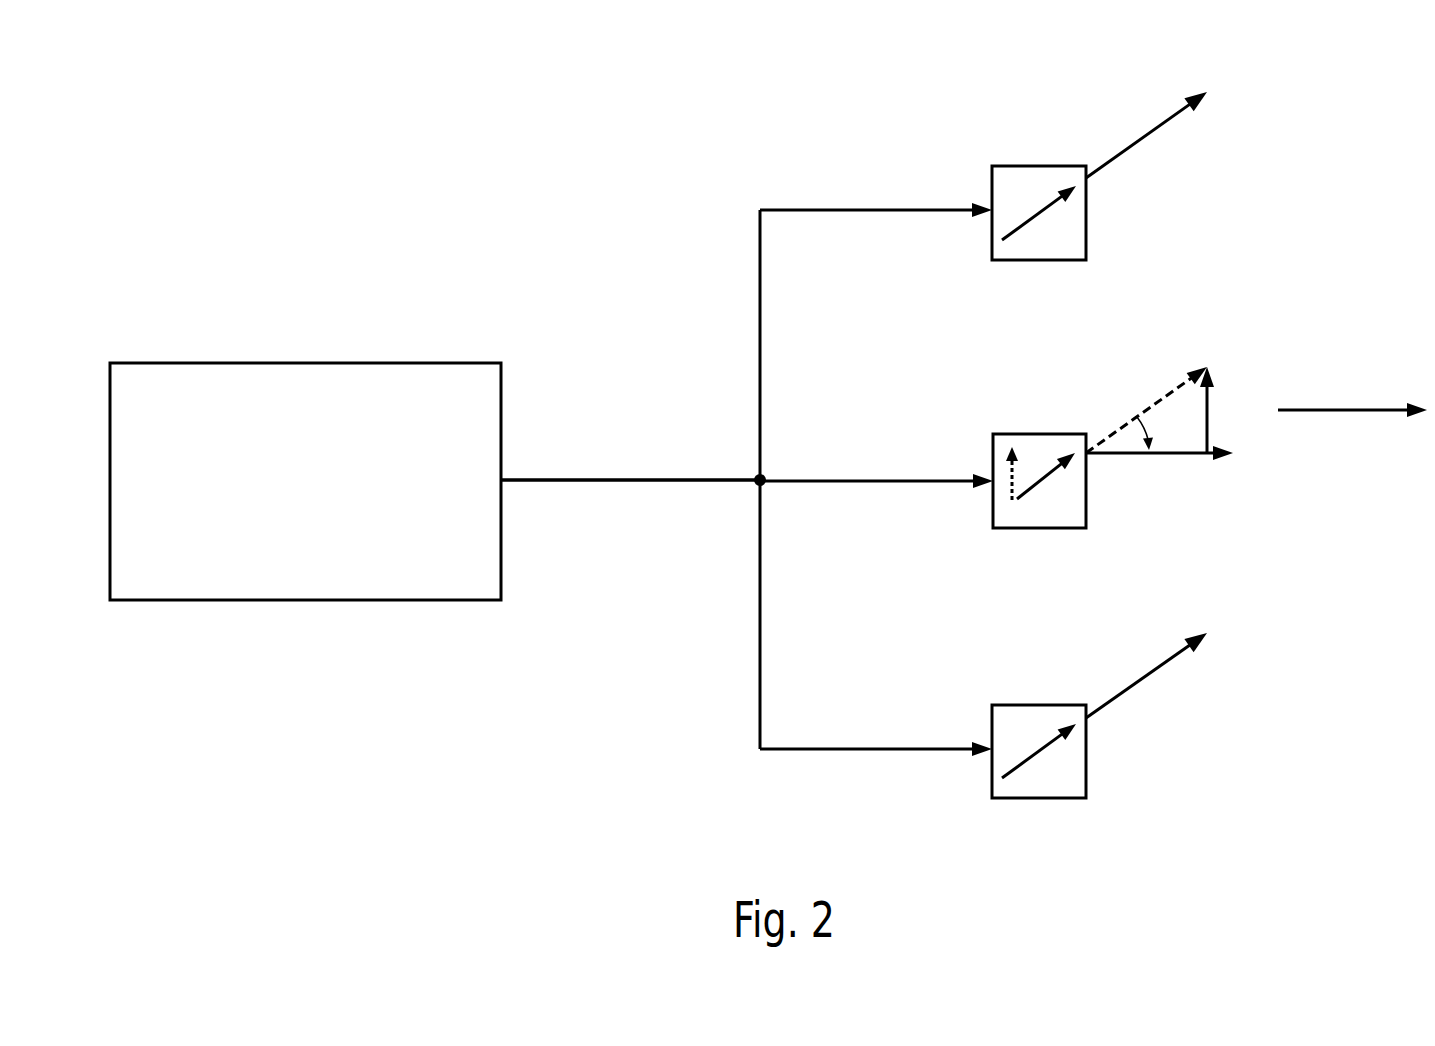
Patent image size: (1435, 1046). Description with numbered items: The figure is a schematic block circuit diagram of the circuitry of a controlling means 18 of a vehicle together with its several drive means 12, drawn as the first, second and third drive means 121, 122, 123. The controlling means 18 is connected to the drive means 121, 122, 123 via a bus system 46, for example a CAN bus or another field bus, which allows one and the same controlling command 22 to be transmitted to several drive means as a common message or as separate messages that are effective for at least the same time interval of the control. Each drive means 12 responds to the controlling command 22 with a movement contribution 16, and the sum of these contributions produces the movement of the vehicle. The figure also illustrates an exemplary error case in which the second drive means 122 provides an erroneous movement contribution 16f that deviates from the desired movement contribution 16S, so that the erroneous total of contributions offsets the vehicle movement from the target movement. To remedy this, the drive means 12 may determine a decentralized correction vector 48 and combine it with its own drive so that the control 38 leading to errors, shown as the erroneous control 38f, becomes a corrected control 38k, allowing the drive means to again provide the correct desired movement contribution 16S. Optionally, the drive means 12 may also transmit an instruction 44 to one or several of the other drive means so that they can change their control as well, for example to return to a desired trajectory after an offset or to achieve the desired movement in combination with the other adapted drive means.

The controlling means 18 is at (301, 363).
The controlling command 22 is at (630, 480).
The bus system 46 is at (570, 395).
The drive means 12 is at (1039, 437).
The first drive means 121 is at (1038, 166).
The second drive means 122 is at (1036, 434).
The third drive means 123 is at (1038, 705).
The control 38 is at (1002, 505).
The corrected control 38k is at (1008, 472).
The control leading to errors 38f is at (1037, 485).
The movement contribution 16 is at (1159, 413).
The desired movement contribution 16S is at (1142, 740).
The erroneous movement contribution 16f is at (1172, 456).
The decentralized correction vector 48 is at (1209, 427).
The instruction 44 is at (1348, 410).